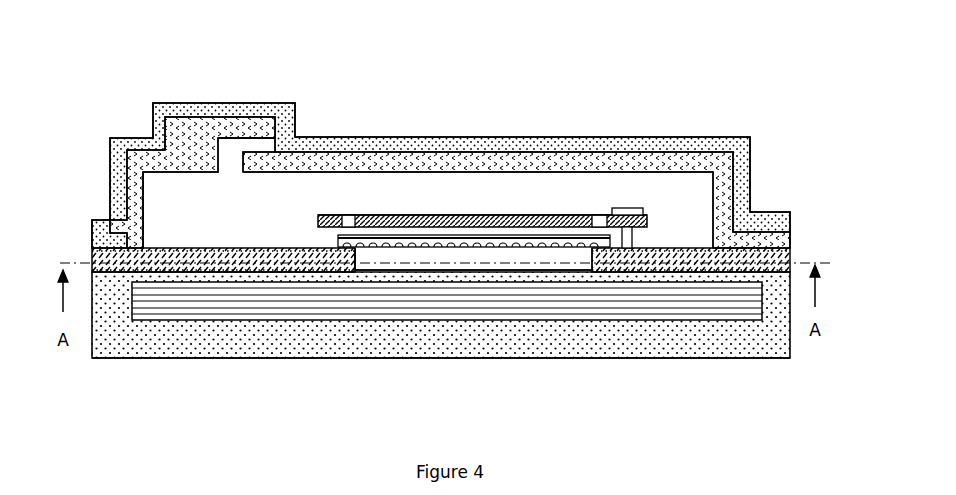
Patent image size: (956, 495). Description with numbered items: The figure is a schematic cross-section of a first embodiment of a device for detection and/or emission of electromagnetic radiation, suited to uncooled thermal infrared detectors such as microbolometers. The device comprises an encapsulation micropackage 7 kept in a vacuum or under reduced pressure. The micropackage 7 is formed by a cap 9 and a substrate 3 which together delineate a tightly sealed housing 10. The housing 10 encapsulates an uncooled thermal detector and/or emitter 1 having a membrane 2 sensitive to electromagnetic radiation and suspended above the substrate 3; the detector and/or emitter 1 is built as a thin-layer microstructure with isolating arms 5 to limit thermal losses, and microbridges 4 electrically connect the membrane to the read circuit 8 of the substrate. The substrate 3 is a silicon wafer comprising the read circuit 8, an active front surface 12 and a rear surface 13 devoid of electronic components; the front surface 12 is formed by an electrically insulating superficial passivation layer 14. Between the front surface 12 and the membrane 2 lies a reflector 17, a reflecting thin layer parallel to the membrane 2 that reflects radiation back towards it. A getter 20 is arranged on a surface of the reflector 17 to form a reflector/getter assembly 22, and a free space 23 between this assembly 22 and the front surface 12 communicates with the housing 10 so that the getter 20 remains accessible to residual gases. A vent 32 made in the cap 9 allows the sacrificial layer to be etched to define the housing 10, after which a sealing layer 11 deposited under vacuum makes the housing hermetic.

The uncooled thermal detector and/or emitter 1 is at (475, 206).
The membrane 2 is at (418, 215).
The substrate 3 is at (562, 327).
The microbridges 4 is at (632, 250).
The isolating arms 5 is at (627, 213).
The encapsulation micropackage 7 is at (656, 114).
The read circuit 8 is at (247, 298).
The cap 9 is at (185, 133).
The housing 10 is at (342, 192).
The sealing layer 11 is at (257, 113).
The front surface 12 is at (168, 247).
The rear surface 13 is at (172, 358).
The superficial passivation layer 14 is at (777, 255).
The reflector 17 is at (335, 245).
The getter 20 is at (382, 247).
The reflector/getter assembly 22 is at (455, 248).
The free space 23 is at (523, 253).
The vent 32 is at (265, 143).